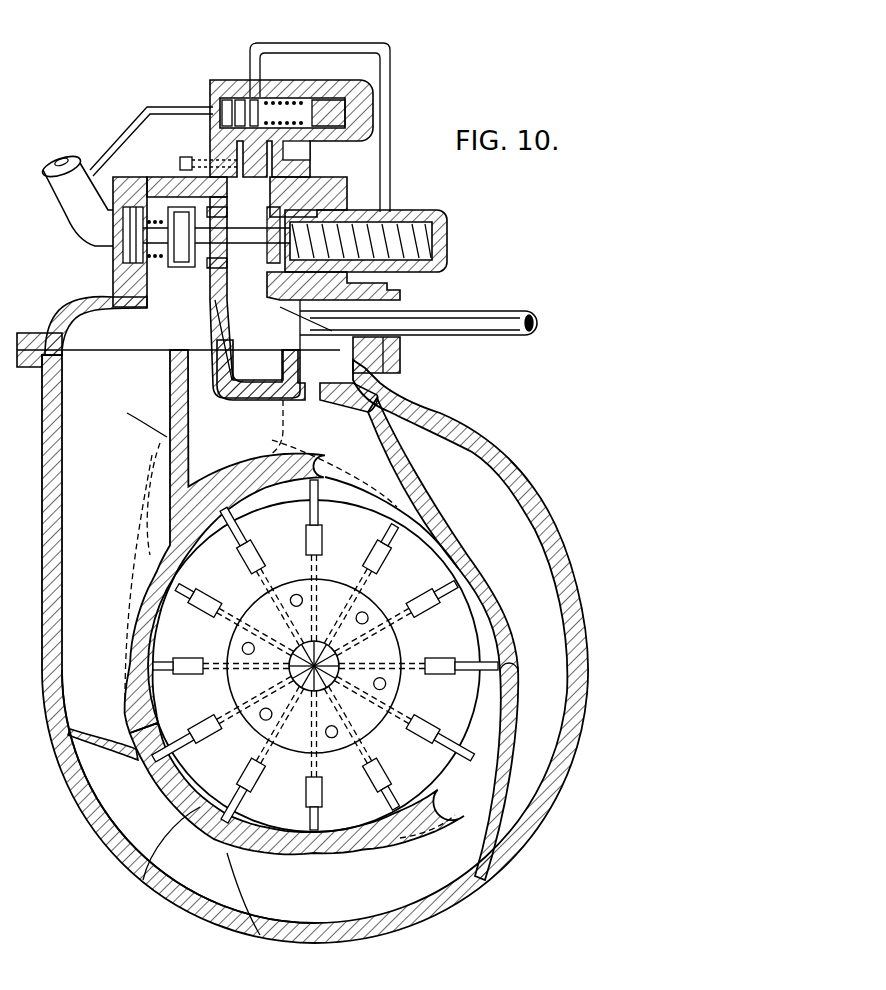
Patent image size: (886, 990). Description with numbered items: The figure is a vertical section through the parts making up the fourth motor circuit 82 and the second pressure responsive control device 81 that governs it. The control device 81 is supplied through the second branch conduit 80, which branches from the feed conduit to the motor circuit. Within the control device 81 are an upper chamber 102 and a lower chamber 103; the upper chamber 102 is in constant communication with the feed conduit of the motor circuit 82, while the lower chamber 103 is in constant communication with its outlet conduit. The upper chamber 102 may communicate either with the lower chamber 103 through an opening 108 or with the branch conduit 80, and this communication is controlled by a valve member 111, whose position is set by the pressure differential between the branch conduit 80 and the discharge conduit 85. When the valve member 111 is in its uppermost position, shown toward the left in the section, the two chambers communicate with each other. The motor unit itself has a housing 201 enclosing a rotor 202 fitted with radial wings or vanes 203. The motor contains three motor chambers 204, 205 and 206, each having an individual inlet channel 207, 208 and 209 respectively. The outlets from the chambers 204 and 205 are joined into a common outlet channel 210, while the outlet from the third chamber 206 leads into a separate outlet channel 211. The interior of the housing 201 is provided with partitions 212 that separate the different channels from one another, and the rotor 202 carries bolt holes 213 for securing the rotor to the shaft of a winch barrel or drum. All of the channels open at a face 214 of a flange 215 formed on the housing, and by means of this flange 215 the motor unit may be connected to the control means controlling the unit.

The second branch conduit 80 is at (82, 160).
The second pressure responsive control device 81 is at (98, 258).
The fourth motor circuit 82 is at (482, 438).
The discharge conduit 85 is at (490, 328).
The upper chamber 102 is at (172, 289).
The lower chamber 103 is at (395, 345).
The opening 108 is at (222, 223).
The valve member 111 is at (241, 244).
The housing 201 is at (318, 944).
The rotor 202 is at (443, 617).
The radial wings or vanes 203 is at (507, 665).
The motor chamber 204 is at (437, 790).
The motor chamber 205 is at (143, 880).
The third motor chamber 206 is at (250, 500).
The inlet channel 207 is at (87, 371).
The inlet channel 208 is at (153, 377).
The inlet channel 209 is at (199, 373).
The common outlet channel 210 is at (380, 387).
The separate outlet channel 211 is at (257, 371).
The partitions 212 is at (407, 472).
The bolt holes 213 is at (338, 734).
The face 214 is at (313, 362).
The flange 215 is at (33, 378).